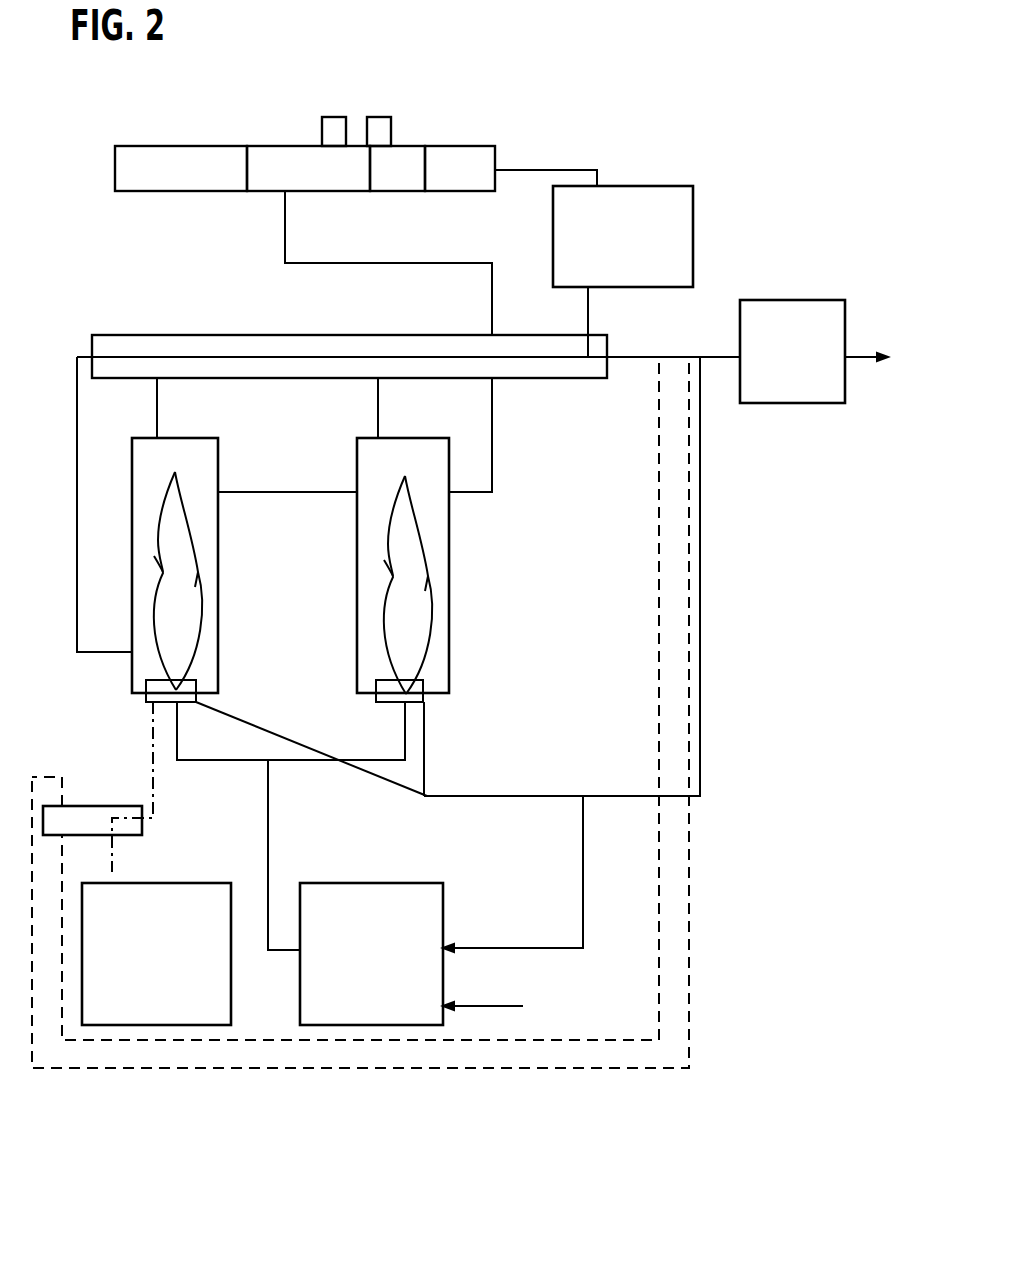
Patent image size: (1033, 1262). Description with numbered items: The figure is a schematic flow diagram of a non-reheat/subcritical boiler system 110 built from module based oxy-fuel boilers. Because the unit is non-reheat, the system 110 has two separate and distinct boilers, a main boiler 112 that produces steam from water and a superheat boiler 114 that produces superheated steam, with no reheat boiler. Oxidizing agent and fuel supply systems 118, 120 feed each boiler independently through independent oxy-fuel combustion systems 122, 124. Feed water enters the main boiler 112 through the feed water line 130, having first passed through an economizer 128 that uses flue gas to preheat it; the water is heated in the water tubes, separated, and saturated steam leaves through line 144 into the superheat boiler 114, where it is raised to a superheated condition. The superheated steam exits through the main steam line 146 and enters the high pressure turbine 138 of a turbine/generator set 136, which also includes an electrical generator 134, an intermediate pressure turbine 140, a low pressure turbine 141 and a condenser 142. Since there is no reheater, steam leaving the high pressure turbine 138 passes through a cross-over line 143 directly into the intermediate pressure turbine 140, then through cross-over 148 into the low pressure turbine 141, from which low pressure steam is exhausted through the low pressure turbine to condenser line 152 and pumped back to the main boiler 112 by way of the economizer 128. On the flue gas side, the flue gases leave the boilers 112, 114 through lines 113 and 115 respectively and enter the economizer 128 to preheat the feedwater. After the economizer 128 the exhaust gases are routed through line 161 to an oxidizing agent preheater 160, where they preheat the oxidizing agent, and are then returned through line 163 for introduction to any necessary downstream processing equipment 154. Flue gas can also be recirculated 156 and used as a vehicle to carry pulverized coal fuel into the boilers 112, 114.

The boiler system 110 is at (718, 190).
The main boiler 112 is at (203, 447).
The flue gas line 113 is at (157, 405).
The superheat boiler 114 is at (450, 588).
The flue gas line 115 is at (380, 405).
The oxidizing agent supply system 118 is at (247, 972).
The fuel supply system 120 is at (288, 1030).
The oxy-fuel combustion system 122 is at (198, 687).
The oxy-fuel combustion system 124 is at (423, 687).
The economizer 128 is at (157, 337).
The feed water line 130 is at (78, 463).
The electrical generator 134 is at (225, 155).
The turbine/generator set 136 is at (298, 80).
The high pressure turbine 138 is at (287, 147).
The intermediate pressure turbine 140 is at (397, 191).
The low pressure turbine 141 is at (482, 145).
The condenser 142 is at (628, 190).
The cross-over line 143 is at (345, 122).
The line 144 is at (262, 490).
The main steam line 146 is at (492, 427).
The cross-over 148 is at (377, 118).
The low pressure turbine to condenser line 152 is at (533, 168).
The downstream processing equipment 154 is at (763, 307).
The flue gas recirculation 156 is at (700, 640).
The oxidizing agent preheater 160 is at (80, 810).
The line 161 is at (660, 780).
The line 163 is at (690, 888).